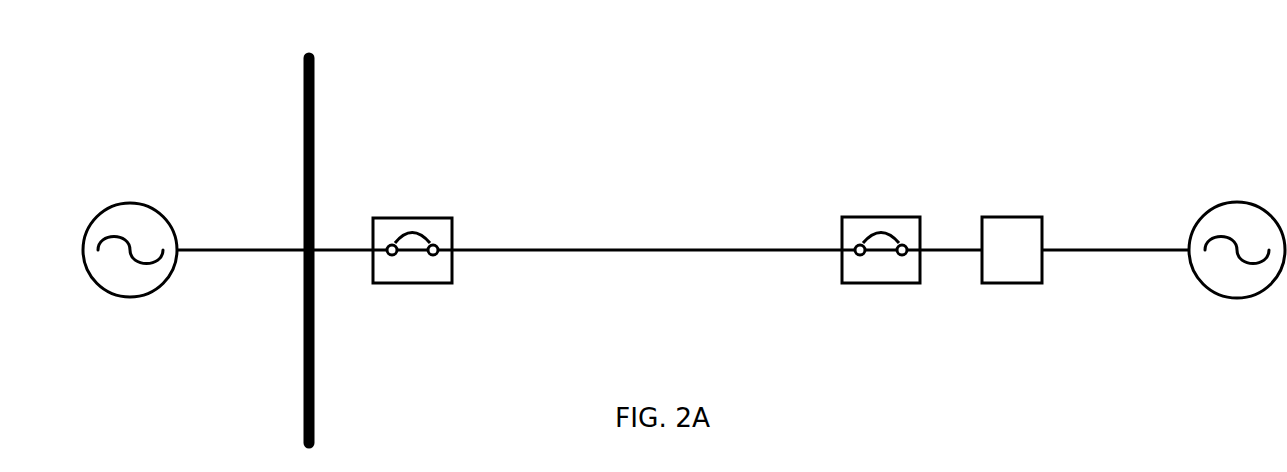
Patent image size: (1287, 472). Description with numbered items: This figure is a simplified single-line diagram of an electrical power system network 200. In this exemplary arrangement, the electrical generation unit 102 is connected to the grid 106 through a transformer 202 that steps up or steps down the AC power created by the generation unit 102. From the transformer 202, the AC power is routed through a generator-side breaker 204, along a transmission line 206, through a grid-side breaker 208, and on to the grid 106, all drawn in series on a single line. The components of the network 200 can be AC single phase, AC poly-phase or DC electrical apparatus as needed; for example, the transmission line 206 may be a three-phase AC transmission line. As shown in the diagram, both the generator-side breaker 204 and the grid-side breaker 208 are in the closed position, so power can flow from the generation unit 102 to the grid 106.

The electrical power system network 200 is at (684, 249).
The electrical generation unit 102 is at (1217, 290).
The grid 106 is at (168, 270).
The transformer 202 is at (1051, 218).
The generator-side breaker 204 is at (847, 217).
The transmission line 206 is at (683, 287).
The grid-side breaker 208 is at (456, 217).